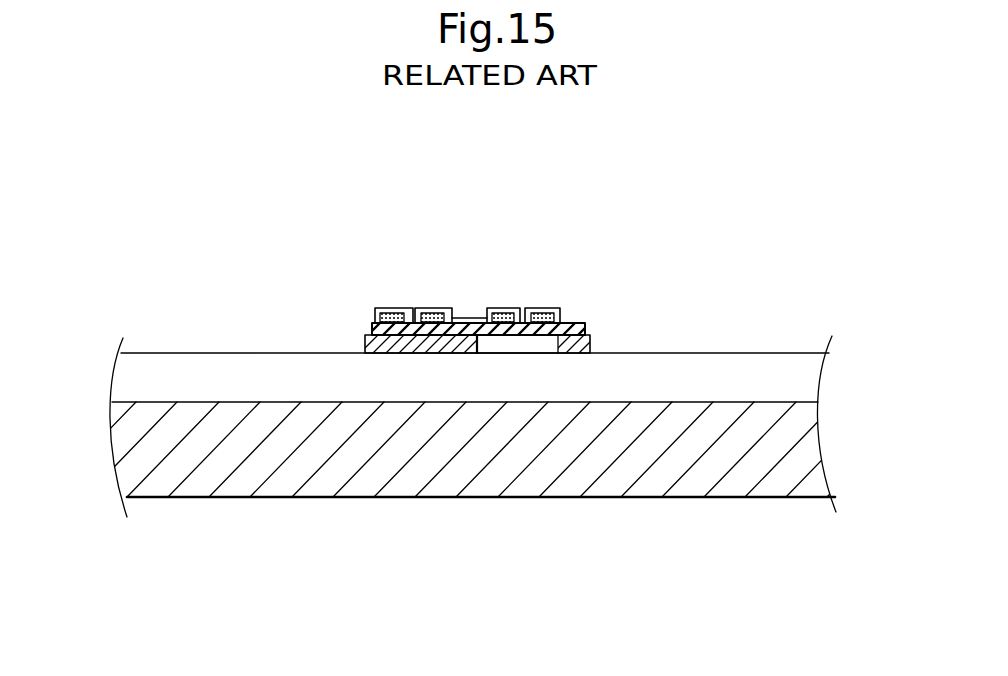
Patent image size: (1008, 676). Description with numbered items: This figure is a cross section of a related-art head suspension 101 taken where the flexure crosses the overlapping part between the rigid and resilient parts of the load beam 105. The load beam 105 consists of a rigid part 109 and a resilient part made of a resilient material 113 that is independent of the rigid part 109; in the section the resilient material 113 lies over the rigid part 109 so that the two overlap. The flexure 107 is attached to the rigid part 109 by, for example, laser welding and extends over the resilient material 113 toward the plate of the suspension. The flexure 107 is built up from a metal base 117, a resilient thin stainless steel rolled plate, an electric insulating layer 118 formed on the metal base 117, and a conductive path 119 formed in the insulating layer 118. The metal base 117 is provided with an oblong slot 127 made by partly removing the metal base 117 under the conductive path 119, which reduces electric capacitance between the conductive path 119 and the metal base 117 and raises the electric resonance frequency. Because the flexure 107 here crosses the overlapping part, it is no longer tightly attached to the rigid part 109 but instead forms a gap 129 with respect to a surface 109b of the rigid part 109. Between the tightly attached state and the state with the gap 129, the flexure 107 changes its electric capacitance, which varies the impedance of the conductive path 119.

The head suspension 101 is at (461, 328).
The load beam 105 is at (363, 500).
The flexure 107 is at (573, 318).
The rigid part 109 is at (232, 487).
The surface of the rigid part 109b is at (651, 392).
The resilient material 113 is at (739, 351).
The metal base 117 is at (365, 337).
The electric insulating layer 118 is at (558, 313).
The conductive path 119 is at (500, 316).
The slot 127 is at (480, 345).
The gap 129 is at (547, 382).